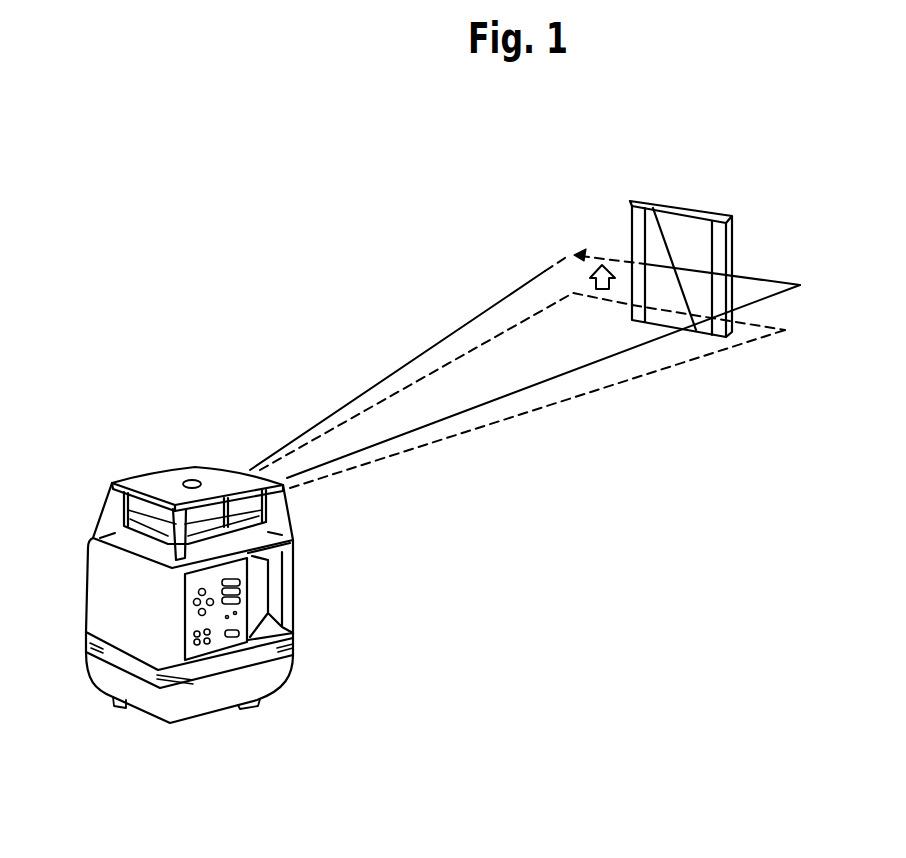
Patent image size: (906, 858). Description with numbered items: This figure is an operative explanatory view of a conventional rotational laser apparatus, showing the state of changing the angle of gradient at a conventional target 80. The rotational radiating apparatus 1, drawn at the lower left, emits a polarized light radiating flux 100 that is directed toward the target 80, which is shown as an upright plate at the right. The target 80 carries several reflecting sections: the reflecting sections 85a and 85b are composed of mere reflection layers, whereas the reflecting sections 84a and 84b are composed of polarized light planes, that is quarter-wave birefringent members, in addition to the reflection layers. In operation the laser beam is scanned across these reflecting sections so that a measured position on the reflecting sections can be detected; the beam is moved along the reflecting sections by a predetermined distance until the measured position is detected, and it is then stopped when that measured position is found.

The rotational radiating apparatus 1 is at (298, 588).
The polarized light radiating flux 100 is at (478, 315).
The target 80 is at (670, 190).
The reflecting section 85a is at (632, 232).
The reflecting section 85b is at (690, 230).
The reflecting section 84b is at (718, 248).
The reflecting section 84a is at (670, 293).